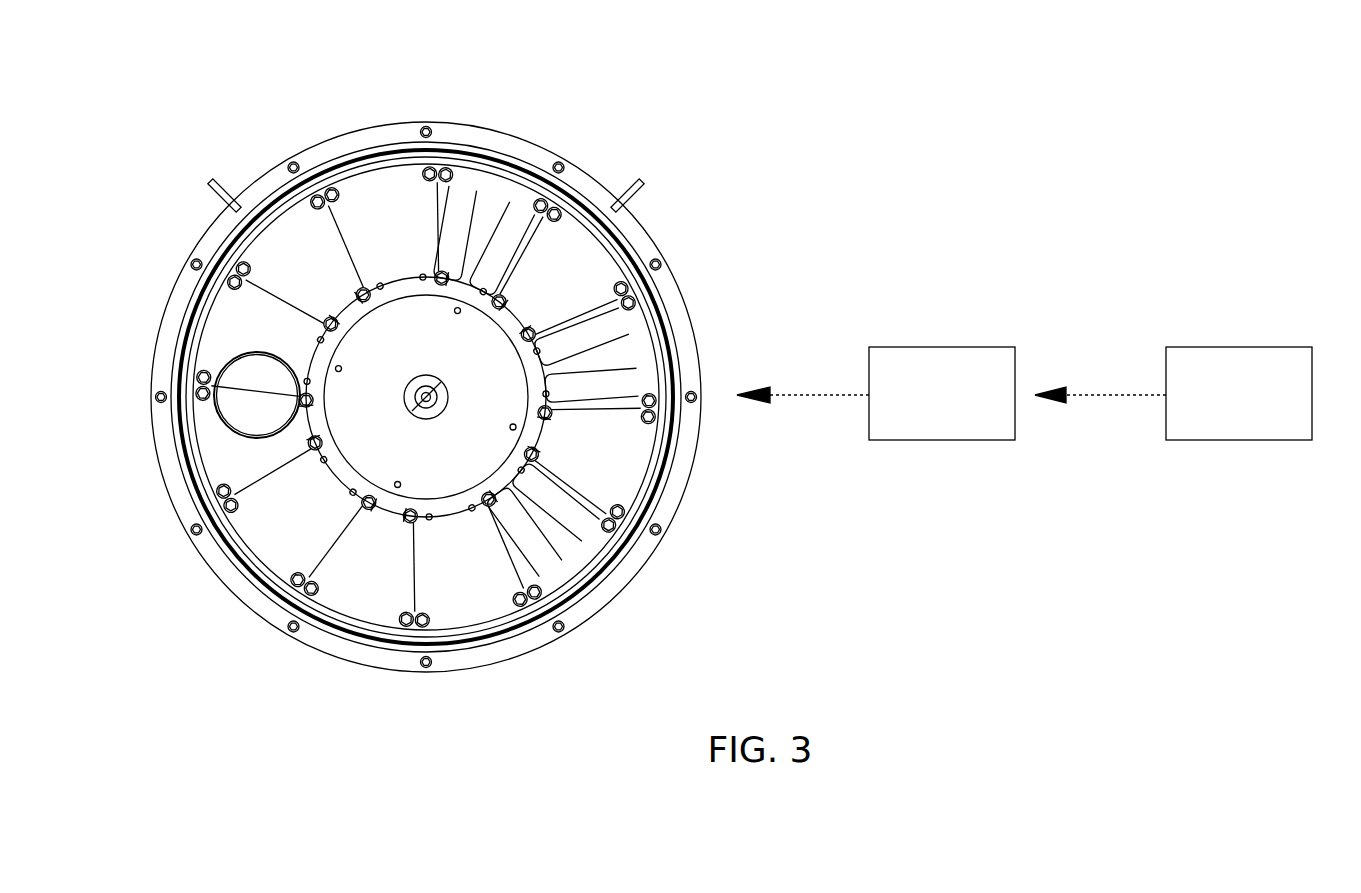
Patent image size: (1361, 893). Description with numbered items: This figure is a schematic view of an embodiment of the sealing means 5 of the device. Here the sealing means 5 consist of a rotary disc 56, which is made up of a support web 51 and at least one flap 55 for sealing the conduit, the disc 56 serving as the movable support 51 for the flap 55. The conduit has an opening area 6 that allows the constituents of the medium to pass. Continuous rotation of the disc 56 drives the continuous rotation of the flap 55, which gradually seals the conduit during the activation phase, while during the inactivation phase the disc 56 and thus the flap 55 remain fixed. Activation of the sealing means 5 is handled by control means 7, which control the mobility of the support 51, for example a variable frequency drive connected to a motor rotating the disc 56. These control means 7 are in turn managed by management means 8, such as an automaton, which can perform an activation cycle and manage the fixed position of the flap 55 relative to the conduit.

The sealing means 5 is at (138, 134).
The movable support 51 is at (365, 160).
The flap 55 is at (294, 240).
The rotary disc 56 is at (562, 547).
The opening area 6 is at (234, 412).
The control means 7 is at (942, 393).
The management means 8 is at (1239, 393).